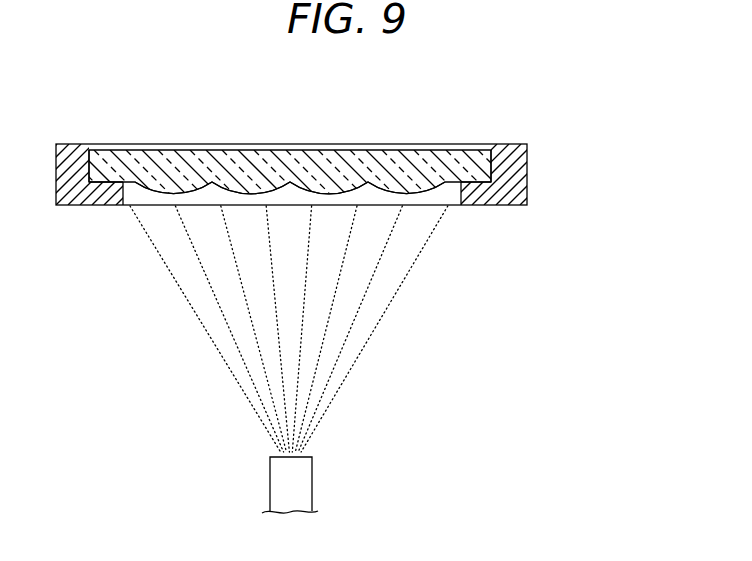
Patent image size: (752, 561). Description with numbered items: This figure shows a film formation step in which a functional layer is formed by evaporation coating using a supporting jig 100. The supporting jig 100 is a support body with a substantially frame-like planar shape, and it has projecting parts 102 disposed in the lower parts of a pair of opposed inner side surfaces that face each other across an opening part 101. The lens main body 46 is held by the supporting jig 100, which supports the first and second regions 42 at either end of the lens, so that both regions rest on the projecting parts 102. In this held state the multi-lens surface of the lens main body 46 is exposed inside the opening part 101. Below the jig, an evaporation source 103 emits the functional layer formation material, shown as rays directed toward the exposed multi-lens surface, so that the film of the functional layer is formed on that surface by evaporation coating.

The first and second regions 42 is at (102, 160).
The lens main body 46 is at (252, 144).
The supporting jig 100 is at (528, 158).
The opening part 101 is at (438, 197).
The projecting parts 102 is at (112, 202).
The evaporation source 103 is at (302, 488).